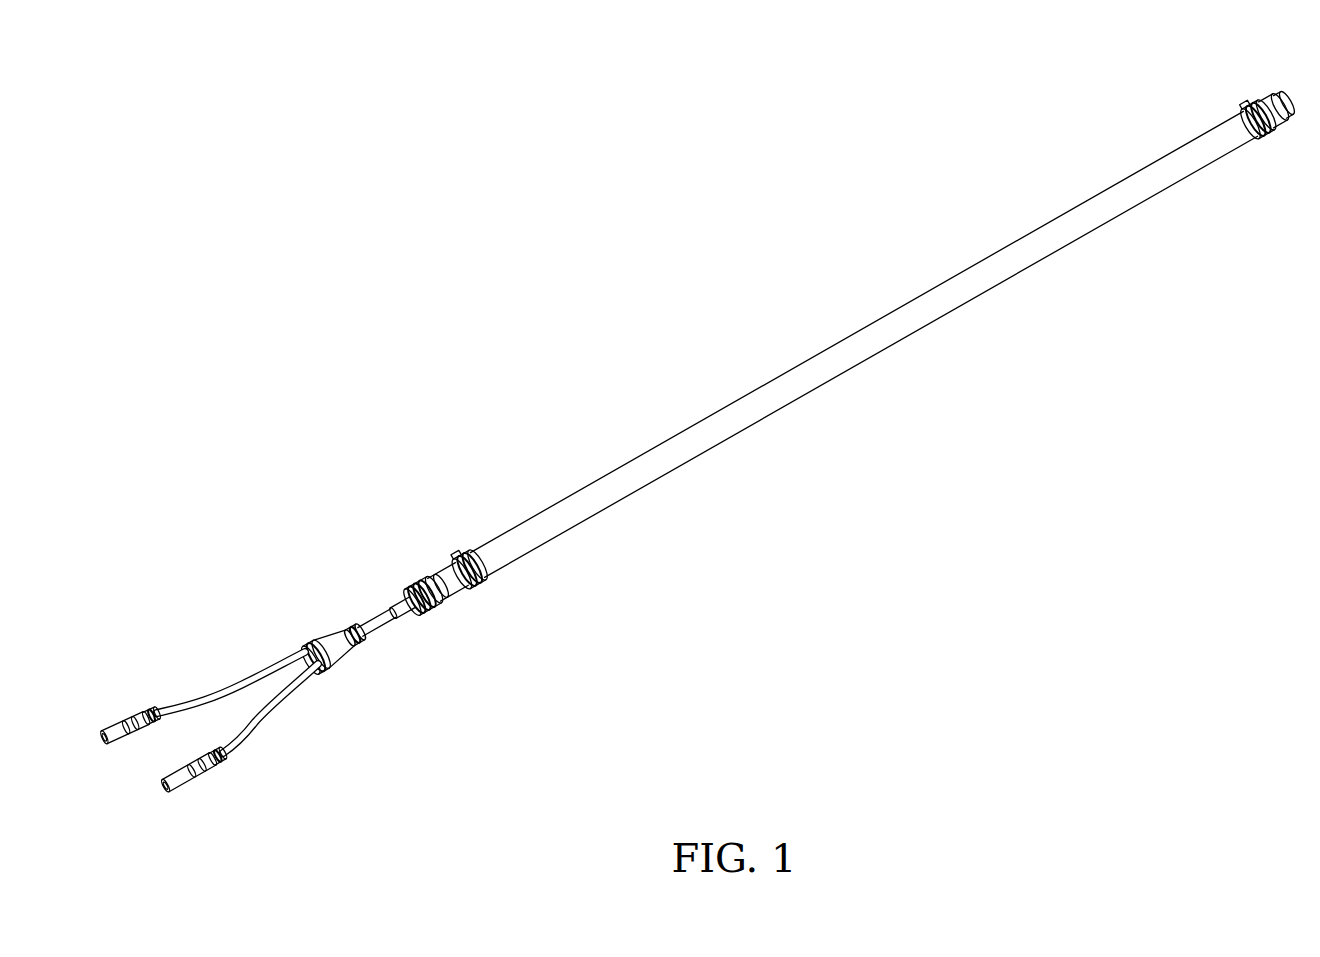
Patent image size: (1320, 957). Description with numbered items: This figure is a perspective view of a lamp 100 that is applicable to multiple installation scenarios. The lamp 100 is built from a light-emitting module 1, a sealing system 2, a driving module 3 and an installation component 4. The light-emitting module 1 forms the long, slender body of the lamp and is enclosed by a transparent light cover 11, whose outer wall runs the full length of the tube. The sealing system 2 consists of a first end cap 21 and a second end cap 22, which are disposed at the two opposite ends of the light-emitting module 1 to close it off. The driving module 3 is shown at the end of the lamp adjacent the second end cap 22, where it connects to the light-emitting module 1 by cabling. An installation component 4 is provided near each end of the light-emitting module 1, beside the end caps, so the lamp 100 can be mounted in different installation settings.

The lamp 100 is at (630, 348).
The light-emitting module 1 is at (763, 413).
The transparent light cover 11 is at (657, 467).
The sealing system 2 is at (437, 583).
The first end cap 21 is at (1272, 112).
The second end cap 22 is at (457, 590).
The driving module 3 is at (250, 650).
The installation component 4 is at (487, 583).